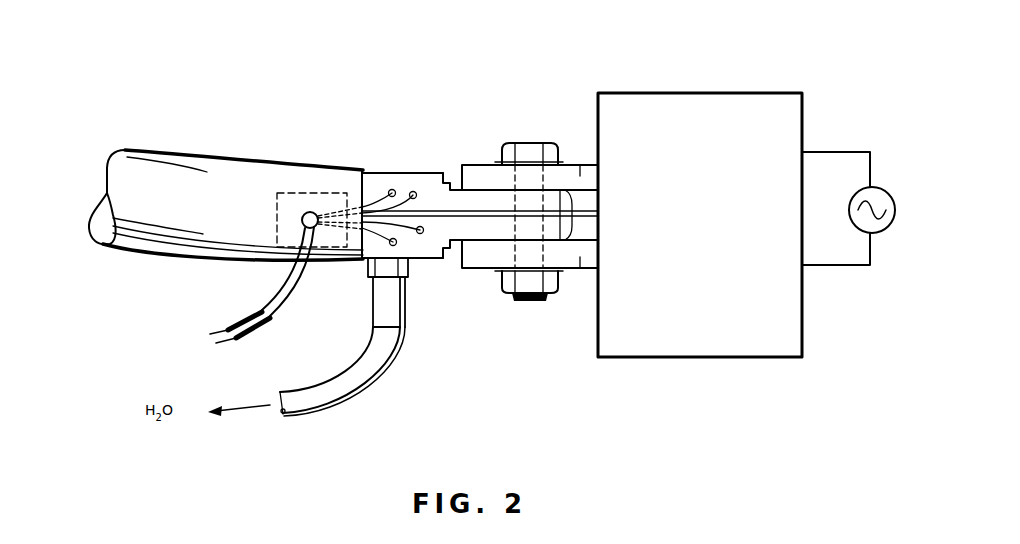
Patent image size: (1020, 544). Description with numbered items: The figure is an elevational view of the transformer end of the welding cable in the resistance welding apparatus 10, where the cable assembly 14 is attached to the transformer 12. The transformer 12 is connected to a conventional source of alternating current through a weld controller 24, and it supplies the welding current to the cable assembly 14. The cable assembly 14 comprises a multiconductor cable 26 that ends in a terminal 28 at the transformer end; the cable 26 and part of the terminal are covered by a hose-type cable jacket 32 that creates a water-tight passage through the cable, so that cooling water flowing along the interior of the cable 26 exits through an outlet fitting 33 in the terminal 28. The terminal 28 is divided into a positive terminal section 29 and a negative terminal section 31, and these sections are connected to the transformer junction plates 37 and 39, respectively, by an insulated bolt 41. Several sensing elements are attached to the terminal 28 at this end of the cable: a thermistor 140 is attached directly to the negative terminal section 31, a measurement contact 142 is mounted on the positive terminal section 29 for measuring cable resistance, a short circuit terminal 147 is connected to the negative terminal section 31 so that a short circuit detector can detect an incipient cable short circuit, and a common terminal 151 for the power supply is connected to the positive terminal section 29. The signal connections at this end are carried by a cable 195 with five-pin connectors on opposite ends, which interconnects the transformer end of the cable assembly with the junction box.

The resistance welding apparatus 10 is at (490, 83).
The transformer 12 is at (719, 106).
The cable assembly 14 is at (196, 148).
The weld controller 24 is at (878, 187).
The multiconductor cable 26 is at (168, 213).
The terminal 28 is at (378, 166).
The positive terminal section 29 is at (441, 180).
The negative terminal section 31 is at (445, 262).
The cable jacket 32 is at (297, 168).
The outlet fitting 33 is at (406, 303).
The transformer junction plate 37 is at (580, 172).
The transformer junction plate 39 is at (594, 270).
The insulated bolt 41 is at (537, 302).
The thermistor 140 is at (392, 245).
The measurement contact 142 is at (414, 191).
The short circuit terminal 147 is at (420, 234).
The common terminal 151 is at (393, 189).
The cable 195 is at (265, 297).